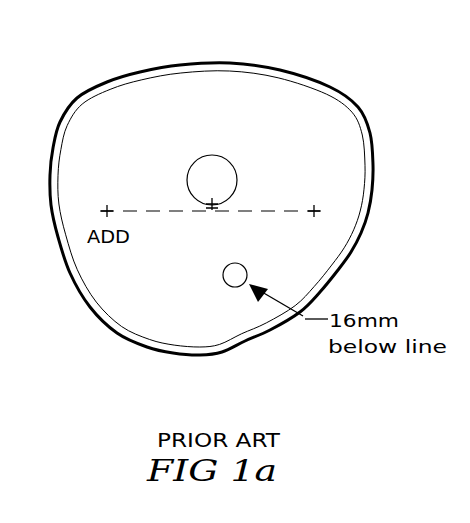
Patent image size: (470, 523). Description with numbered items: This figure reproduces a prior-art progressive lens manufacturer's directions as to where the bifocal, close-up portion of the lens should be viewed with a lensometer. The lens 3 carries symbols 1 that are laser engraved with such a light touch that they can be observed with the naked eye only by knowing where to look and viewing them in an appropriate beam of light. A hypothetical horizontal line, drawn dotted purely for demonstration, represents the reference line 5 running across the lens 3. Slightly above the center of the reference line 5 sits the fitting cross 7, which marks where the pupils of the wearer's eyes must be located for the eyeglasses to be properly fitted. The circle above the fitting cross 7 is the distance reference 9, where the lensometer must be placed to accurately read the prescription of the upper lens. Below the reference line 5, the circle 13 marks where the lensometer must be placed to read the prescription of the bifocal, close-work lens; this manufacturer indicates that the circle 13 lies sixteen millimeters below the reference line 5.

The symbols 1 is at (100, 213).
The lens 3 is at (131, 305).
The reference line 5 is at (258, 210).
The fitting cross 7 is at (196, 204).
The distance reference 9 is at (227, 157).
The circle 13 is at (233, 287).